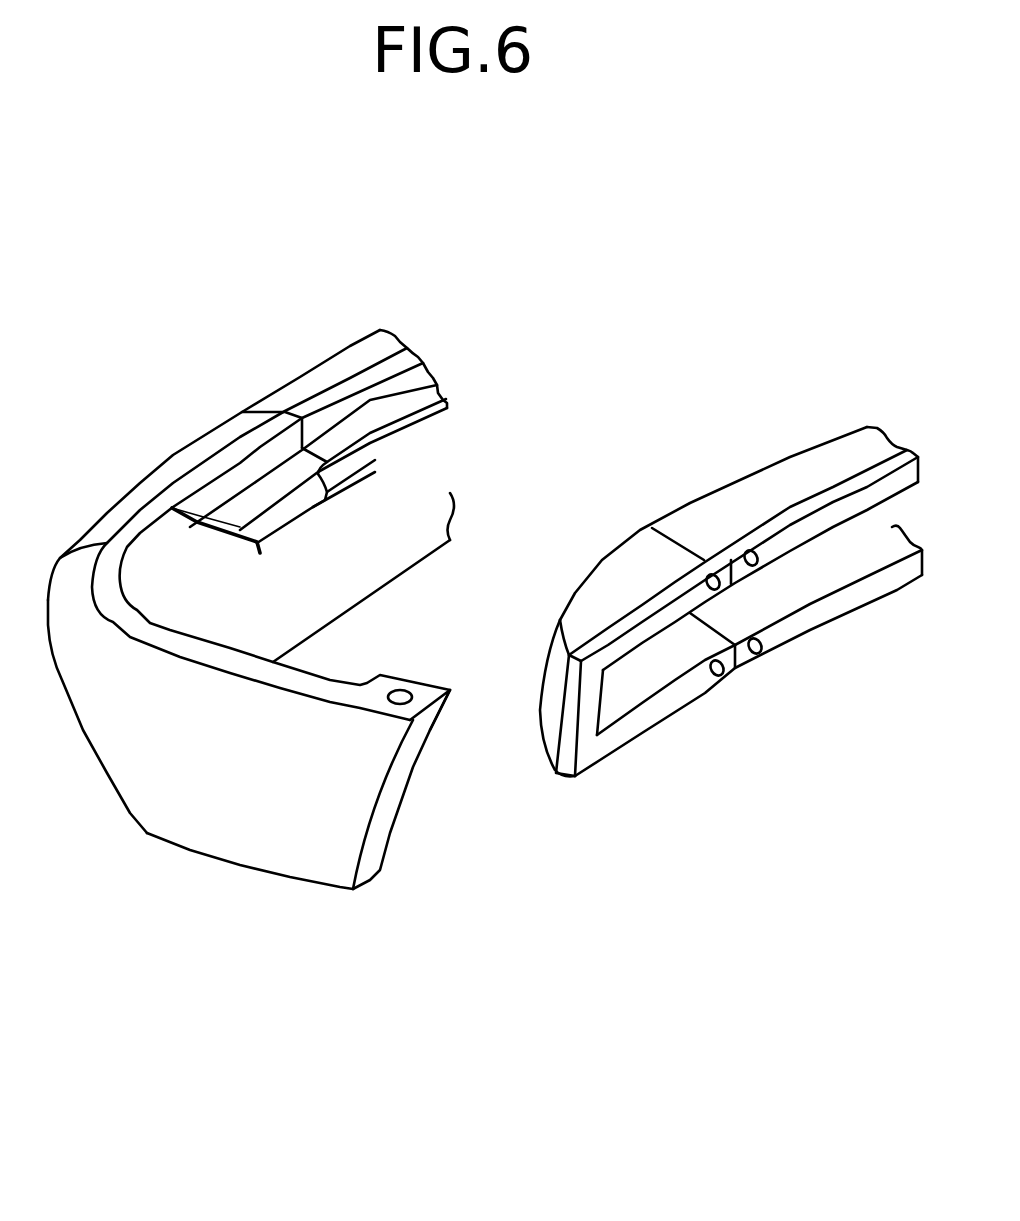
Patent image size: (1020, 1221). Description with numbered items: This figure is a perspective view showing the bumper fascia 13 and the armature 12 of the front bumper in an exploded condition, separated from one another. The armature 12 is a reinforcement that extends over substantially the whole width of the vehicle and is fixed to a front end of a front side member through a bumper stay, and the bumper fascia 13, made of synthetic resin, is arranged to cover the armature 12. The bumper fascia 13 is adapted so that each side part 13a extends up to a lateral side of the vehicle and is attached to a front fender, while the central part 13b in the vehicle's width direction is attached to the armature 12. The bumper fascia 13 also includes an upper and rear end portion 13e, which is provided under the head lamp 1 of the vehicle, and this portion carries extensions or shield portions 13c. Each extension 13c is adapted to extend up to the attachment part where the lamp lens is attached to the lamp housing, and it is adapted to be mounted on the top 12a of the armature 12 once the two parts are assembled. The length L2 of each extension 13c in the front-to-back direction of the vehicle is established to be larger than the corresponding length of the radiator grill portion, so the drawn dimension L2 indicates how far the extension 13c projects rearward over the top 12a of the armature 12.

The head lamp 1 is at (580, 982).
The armature 12 is at (720, 681).
The top of the armature 12a is at (803, 500).
The bumper fascia 13 is at (269, 618).
The side part 13a is at (325, 735).
The central part 13b is at (362, 367).
The extension 13c is at (292, 501).
The upper and rear end portion 13e is at (362, 422).
The length of extension L2 is at (267, 573).